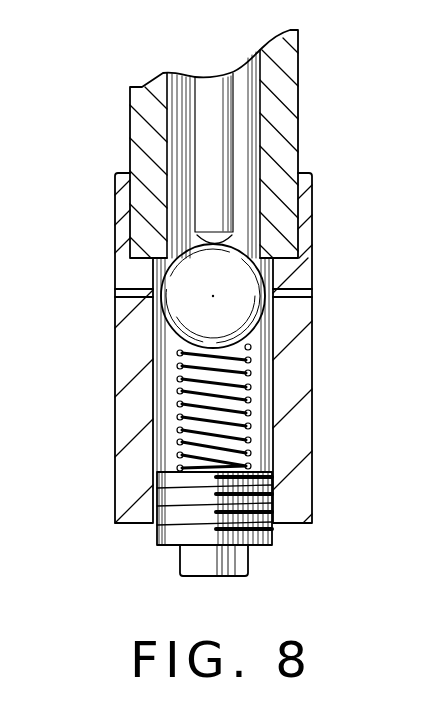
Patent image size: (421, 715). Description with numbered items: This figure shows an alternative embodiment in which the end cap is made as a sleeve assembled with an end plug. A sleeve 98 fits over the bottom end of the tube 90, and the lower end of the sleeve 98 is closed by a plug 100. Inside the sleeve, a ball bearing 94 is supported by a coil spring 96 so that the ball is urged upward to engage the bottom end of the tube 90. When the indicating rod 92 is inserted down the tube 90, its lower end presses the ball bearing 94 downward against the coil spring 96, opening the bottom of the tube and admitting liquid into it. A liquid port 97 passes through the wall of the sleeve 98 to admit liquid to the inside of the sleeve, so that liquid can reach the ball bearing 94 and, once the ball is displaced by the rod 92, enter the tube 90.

The tube 90 is at (143, 132).
The indicating rod 92 is at (208, 92).
The ball bearing 94 is at (243, 318).
The coil spring 96 is at (178, 431).
The liquid port 97 is at (131, 297).
The sleeve 98 is at (130, 362).
The plug 100 is at (262, 497).